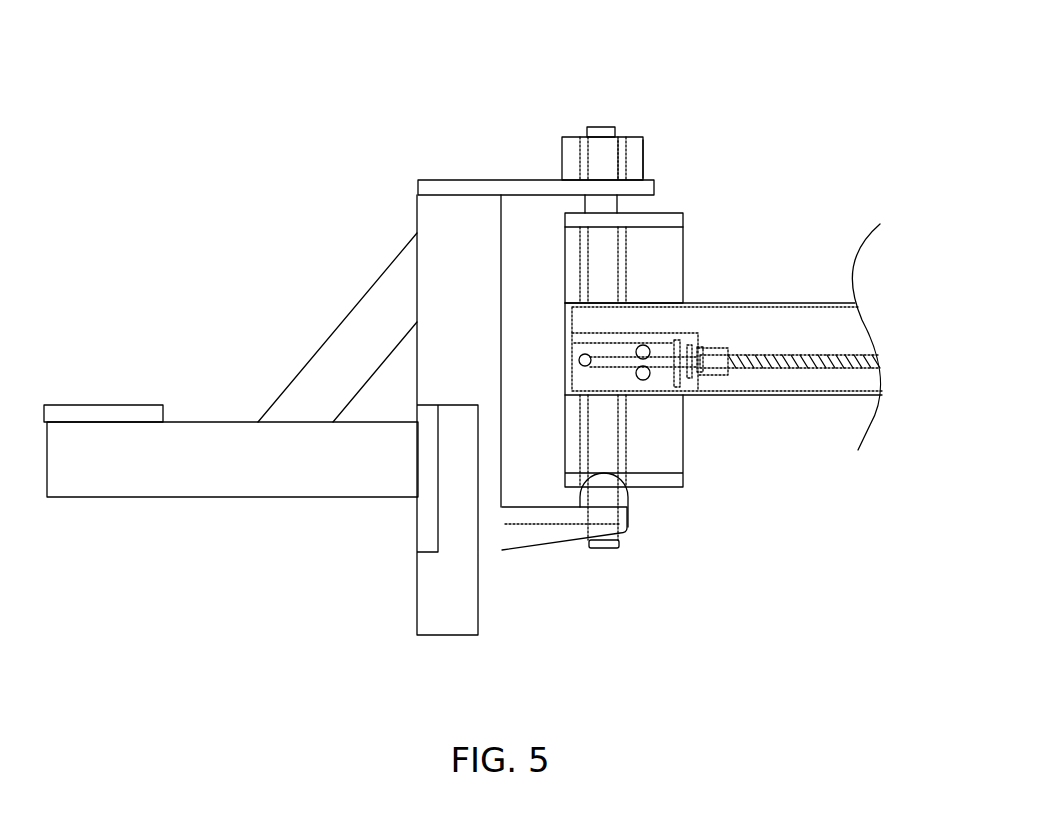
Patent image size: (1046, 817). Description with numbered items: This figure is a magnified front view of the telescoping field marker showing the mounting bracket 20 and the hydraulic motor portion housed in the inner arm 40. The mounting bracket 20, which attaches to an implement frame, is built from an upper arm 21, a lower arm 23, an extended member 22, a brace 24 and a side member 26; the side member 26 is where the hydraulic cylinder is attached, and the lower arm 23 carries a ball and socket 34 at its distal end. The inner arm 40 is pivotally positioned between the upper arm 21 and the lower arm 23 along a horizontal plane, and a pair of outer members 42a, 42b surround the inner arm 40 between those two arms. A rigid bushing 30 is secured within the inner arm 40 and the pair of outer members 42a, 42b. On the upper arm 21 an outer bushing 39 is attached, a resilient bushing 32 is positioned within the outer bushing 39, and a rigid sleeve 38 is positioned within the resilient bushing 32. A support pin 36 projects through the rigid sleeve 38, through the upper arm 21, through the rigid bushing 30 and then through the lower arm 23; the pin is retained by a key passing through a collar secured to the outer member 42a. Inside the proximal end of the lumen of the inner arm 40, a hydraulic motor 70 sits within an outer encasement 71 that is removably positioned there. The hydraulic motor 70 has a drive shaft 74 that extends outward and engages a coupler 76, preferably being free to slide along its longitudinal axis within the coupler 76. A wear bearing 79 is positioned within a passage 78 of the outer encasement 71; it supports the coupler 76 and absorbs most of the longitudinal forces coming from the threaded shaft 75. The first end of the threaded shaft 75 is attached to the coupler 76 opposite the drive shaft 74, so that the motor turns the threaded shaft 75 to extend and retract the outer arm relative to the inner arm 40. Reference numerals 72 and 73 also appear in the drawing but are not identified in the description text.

The mounting bracket 20 is at (422, 208).
The upper arm 21 is at (430, 182).
The extended member 22 is at (208, 500).
The lower arm 23 is at (540, 552).
The brace 24 is at (332, 332).
The side member 26 is at (122, 405).
The rigid bushing 30 is at (585, 256).
The resilient bushing 32 is at (630, 145).
The ball and socket 34 is at (628, 500).
The support pin 36 is at (598, 127).
The rigid sleeve 38 is at (625, 160).
The outer bushing 39 is at (642, 163).
The inner arm 40 is at (793, 302).
The outer member 42a is at (683, 215).
The outer member 42b is at (645, 380).
The hydraulic motor 70 is at (665, 375).
The outer encasement 71 is at (698, 332).
The pivot pin 72 is at (680, 427).
The slide member 73 is at (588, 365).
The drive shaft 74 is at (605, 355).
The threaded shaft 75 is at (840, 368).
The coupler 76 is at (697, 377).
The passage 78 is at (727, 355).
The wear bearing 79 is at (682, 392).